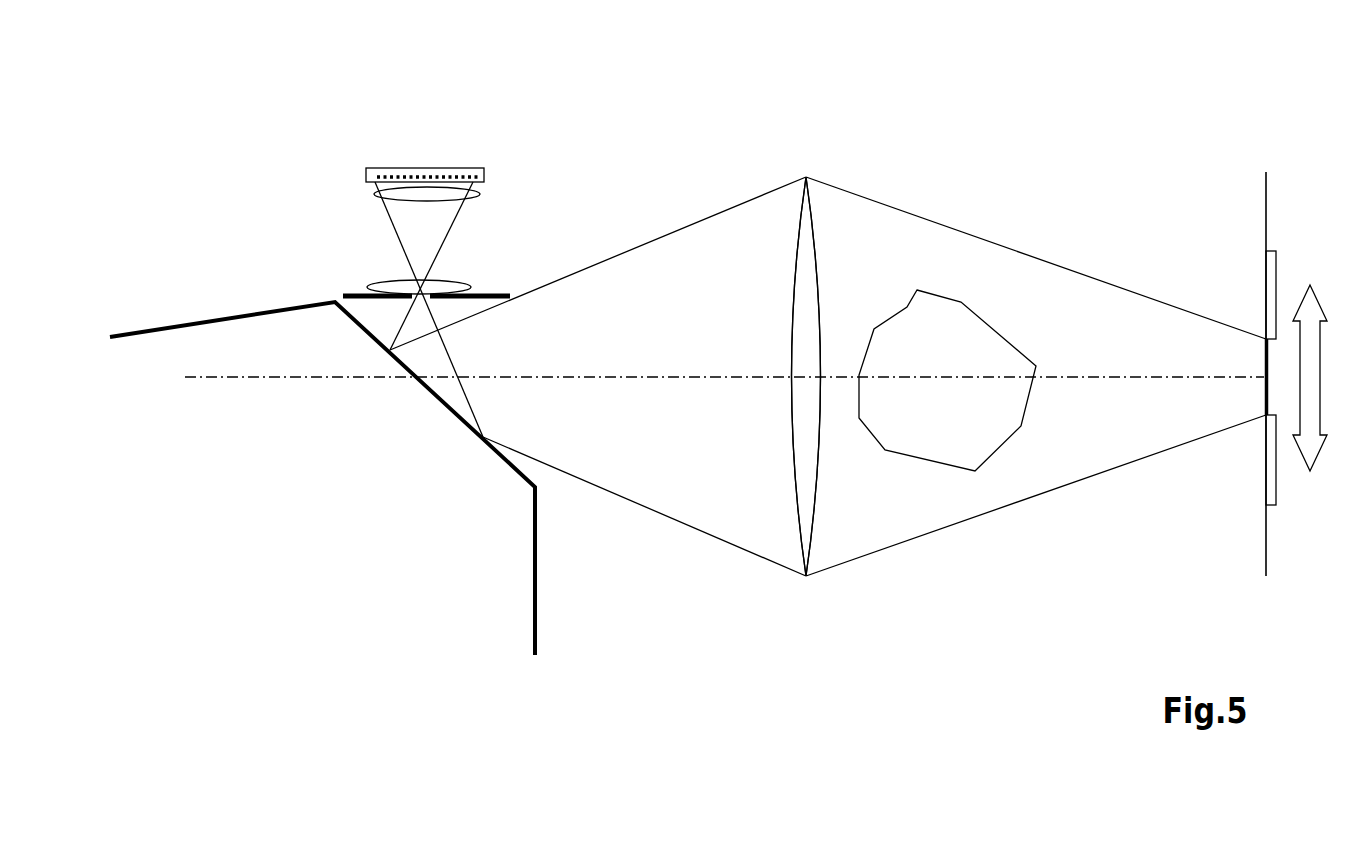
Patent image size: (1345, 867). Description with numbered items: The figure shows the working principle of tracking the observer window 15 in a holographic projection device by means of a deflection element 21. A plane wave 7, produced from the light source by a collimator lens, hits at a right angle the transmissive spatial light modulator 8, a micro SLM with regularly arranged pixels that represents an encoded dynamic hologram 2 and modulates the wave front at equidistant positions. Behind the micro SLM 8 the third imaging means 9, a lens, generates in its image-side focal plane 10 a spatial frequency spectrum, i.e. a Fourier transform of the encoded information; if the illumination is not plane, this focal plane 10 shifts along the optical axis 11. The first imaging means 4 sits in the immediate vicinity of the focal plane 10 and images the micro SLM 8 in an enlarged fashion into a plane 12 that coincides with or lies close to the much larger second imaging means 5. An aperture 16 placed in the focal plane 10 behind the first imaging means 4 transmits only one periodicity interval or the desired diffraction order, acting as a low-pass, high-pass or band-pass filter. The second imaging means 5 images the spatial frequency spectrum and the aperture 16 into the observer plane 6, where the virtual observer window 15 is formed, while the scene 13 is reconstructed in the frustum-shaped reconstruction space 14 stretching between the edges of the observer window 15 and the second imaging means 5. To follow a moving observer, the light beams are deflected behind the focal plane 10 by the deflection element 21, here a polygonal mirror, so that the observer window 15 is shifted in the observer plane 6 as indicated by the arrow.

The dynamic hologram 2 is at (460, 177).
The first imaging means 4 is at (457, 282).
The second imaging means 5 is at (806, 327).
The observer plane 6 is at (1265, 395).
The plane wave 7 is at (378, 234).
The spatial light modulator 8 is at (400, 168).
The third imaging means 9 is at (403, 202).
The focal plane 10 is at (341, 296).
The optical axis 11 is at (218, 377).
The plane 12 is at (805, 177).
The scene 13 is at (932, 337).
The reconstruction space 14 is at (1078, 317).
The observer window 15 is at (1275, 362).
The aperture 16 is at (487, 296).
The deflection element 21 is at (277, 475).